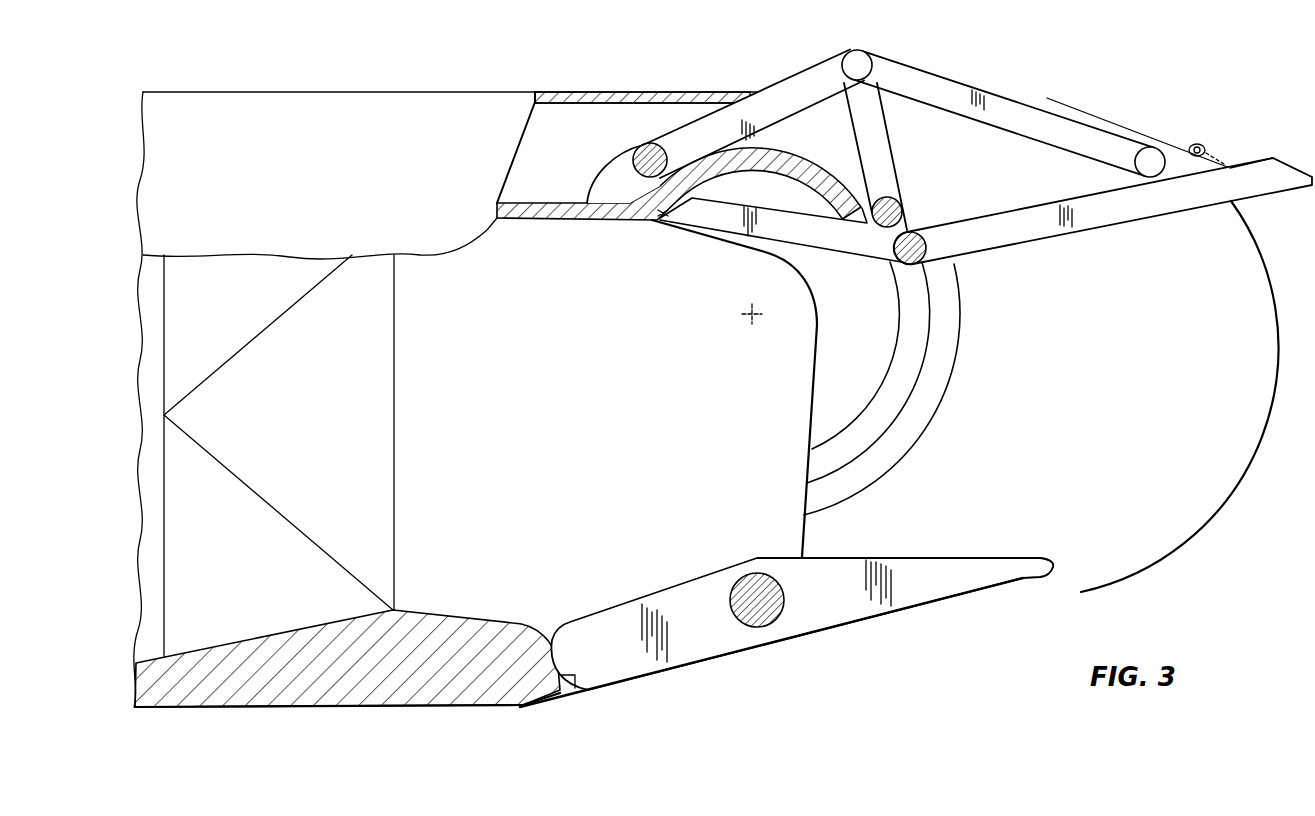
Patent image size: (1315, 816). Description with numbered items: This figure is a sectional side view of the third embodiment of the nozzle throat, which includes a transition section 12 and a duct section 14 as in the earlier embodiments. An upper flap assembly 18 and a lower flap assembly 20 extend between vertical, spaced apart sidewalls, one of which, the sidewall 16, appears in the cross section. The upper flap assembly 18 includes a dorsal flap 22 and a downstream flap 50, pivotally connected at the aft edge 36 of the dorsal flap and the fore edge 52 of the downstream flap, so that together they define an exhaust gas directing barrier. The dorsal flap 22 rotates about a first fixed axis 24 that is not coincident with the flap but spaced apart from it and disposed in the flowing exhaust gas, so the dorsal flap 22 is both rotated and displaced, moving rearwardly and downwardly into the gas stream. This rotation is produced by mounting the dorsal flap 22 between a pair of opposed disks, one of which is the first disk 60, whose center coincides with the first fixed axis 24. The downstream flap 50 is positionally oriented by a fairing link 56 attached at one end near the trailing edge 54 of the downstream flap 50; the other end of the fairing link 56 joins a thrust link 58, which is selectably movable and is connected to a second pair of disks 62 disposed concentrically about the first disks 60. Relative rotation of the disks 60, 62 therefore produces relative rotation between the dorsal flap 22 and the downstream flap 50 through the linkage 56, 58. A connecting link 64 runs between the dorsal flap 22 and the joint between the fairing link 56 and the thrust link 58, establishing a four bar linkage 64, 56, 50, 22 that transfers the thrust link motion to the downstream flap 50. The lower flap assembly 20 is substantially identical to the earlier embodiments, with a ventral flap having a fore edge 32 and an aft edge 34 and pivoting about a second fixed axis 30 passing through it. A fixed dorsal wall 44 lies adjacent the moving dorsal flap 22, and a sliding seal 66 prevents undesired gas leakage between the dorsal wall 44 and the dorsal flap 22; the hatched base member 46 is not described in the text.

The transition section 12 is at (166, 72).
The duct section 14 is at (1310, 108).
The sidewall 16 is at (1069, 367).
The upper flap assembly 18 is at (1183, 110).
The lower flap assembly 20 is at (811, 645).
The dorsal flap 22 is at (797, 248).
The first fixed axis 24 is at (748, 311).
The second fixed axis 30 is at (773, 592).
The fore edge 32 is at (560, 653).
The aft edge 34 is at (1050, 566).
The aft edge 36 is at (897, 268).
The dorsal wall 44 is at (637, 182).
The base plate 46 is at (455, 707).
The downstream flap 50 is at (1089, 221).
The fore edge 52 is at (935, 264).
The trailing edge 54 is at (1263, 198).
The fairing link 56 is at (1004, 124).
The thrust link 58 is at (779, 112).
The first pair of disks 60 is at (847, 364).
The second pair of disks 62 is at (955, 347).
The connecting link 64 is at (859, 147).
The sliding seal 66 is at (662, 222).